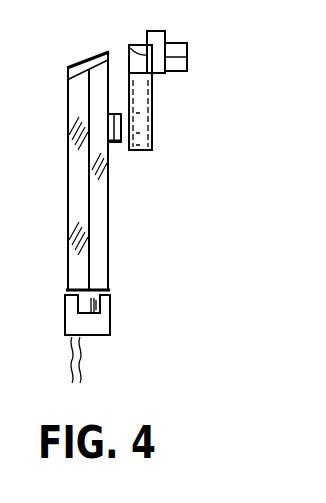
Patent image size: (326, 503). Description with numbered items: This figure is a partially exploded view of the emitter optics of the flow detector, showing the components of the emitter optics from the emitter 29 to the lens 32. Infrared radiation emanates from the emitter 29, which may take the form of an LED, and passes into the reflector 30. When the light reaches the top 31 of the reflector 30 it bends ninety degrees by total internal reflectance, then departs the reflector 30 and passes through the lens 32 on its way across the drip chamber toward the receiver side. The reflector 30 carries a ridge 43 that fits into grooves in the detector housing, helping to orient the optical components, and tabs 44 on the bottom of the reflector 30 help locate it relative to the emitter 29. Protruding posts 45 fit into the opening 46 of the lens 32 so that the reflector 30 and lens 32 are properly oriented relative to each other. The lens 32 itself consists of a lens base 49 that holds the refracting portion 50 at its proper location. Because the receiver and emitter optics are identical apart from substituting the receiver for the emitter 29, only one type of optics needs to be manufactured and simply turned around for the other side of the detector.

The emitter 29 is at (103, 305).
The reflector 30 is at (103, 242).
The top of the reflector 31 is at (85, 63).
The lens 32 is at (238, 132).
The ridge 43 is at (89, 198).
The tabs 44 is at (82, 304).
The protruding posts 45 is at (112, 143).
The opening 46 is at (152, 134).
The lens base 49 is at (148, 98).
The refracting portion 50 is at (187, 58).